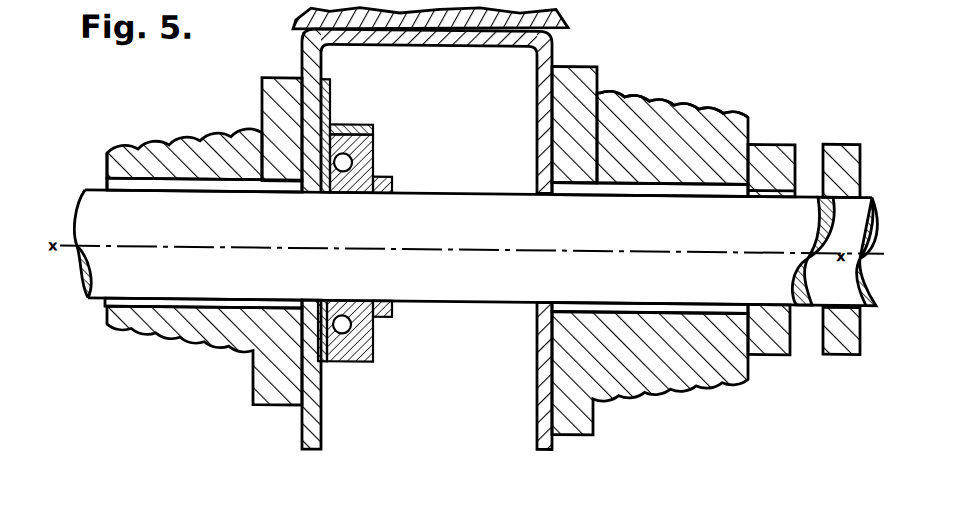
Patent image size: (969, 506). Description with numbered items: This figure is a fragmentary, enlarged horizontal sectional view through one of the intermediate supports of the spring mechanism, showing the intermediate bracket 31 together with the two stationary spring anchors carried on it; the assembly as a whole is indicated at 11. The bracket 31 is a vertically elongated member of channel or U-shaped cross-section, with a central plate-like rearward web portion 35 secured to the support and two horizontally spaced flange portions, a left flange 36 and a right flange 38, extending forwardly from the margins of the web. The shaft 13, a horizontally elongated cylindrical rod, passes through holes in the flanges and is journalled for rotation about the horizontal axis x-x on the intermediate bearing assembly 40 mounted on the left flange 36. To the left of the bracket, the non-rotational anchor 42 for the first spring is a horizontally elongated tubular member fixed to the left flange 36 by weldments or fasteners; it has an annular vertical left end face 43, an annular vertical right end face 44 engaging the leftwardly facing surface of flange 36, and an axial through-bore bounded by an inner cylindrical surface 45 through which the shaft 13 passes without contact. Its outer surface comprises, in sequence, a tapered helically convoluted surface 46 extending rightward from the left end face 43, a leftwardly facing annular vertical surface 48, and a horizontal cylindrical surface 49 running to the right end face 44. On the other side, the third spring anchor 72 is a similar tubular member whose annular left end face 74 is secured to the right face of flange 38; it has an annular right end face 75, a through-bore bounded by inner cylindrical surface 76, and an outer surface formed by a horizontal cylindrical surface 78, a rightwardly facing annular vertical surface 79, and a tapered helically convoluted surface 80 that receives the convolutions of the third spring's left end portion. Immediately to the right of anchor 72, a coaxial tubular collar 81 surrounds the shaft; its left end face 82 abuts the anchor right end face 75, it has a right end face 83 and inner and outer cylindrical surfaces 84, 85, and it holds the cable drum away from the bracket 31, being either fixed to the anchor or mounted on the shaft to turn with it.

The coupling assembly 11 is at (572, 33).
The shaft 13 is at (77, 300).
The intermediate bracket 31 is at (415, 58).
The rearward web portion 35 is at (452, 45).
The left flange portion 36 is at (302, 430).
The right flange portion 38 is at (552, 442).
The intermediate bearing assembly 40 is at (343, 368).
The anchor 42 is at (180, 355).
The left end face 43 is at (107, 160).
The right end face 44 is at (330, 96).
The inner cylindrical surface 45 is at (203, 185).
The tapered helically-convoluted surface 46 is at (180, 142).
The annular vertical surface 48 is at (262, 92).
The horizontal cylindrical surface 49 is at (303, 70).
The third spring anchor 72 is at (745, 92).
The left end face 74 is at (537, 148).
The right end face 75 is at (755, 136).
The inner cylindrical surface 76 is at (598, 189).
The horizontal cylindrical surface 78 is at (578, 62).
The annular vertical surface 79 is at (600, 88).
The tapered helically-convoluted surface 80 is at (706, 104).
The collar 81 is at (778, 347).
The left end face 82 is at (748, 357).
The right end face 83 is at (828, 138).
The inner cylindrical surface 84 is at (770, 190).
The outer cylindrical surface 85 is at (765, 140).